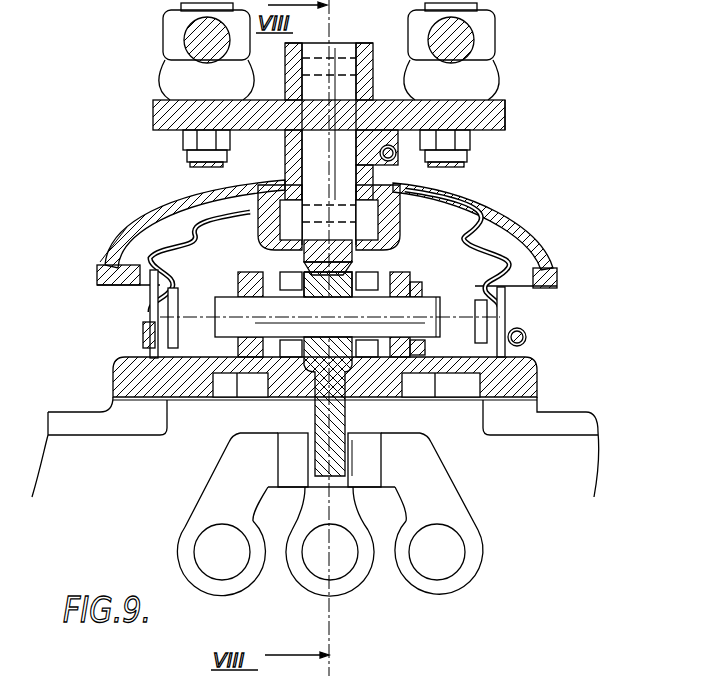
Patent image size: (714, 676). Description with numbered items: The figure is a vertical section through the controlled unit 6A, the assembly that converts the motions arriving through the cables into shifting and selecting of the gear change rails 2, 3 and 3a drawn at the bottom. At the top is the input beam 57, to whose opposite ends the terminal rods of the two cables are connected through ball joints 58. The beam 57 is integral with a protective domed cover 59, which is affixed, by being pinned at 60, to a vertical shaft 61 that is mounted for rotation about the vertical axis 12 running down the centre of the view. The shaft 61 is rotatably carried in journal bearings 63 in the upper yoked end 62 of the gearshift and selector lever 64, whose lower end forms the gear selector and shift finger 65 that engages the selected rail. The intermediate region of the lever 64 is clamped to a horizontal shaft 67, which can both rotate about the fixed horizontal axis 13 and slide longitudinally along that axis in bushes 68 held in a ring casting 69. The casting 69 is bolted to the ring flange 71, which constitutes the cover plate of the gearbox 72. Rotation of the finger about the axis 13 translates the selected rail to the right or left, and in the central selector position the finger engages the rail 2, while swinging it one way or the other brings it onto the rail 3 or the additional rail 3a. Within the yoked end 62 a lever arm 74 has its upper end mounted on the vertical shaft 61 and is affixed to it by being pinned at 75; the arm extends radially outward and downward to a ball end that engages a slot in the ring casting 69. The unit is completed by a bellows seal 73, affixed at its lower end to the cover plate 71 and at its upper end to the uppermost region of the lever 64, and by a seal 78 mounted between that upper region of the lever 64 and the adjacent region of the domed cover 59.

The gear change rail 2 is at (260, 506).
The gear change rail 3 is at (280, 455).
The additional gear change rail 3a is at (365, 470).
The controlled unit 6A is at (145, 178).
The vertical axis 12 is at (331, 35).
The horizontal axis 13 is at (505, 300).
The input beam 57 is at (160, 115).
The ball joint 58 is at (175, 37).
The protective domed cover 59 is at (143, 202).
The pin 60 is at (361, 62).
The vertical shaft 61 is at (310, 113).
The upper yoked end 62 is at (170, 212).
The journal bearing 63 is at (378, 158).
The gearshift and selector lever 64 is at (309, 380).
The gear selector and shift finger 65 is at (368, 474).
The horizontal shaft 67 is at (233, 307).
The bush 68 is at (233, 347).
The ring casting 69 is at (262, 350).
The ring flange 71 is at (128, 377).
The gearbox 72 is at (97, 443).
The bellows seal 73 is at (170, 250).
The lever arm 74 is at (400, 215).
The pin 75 is at (395, 200).
The seal 78 is at (499, 112).